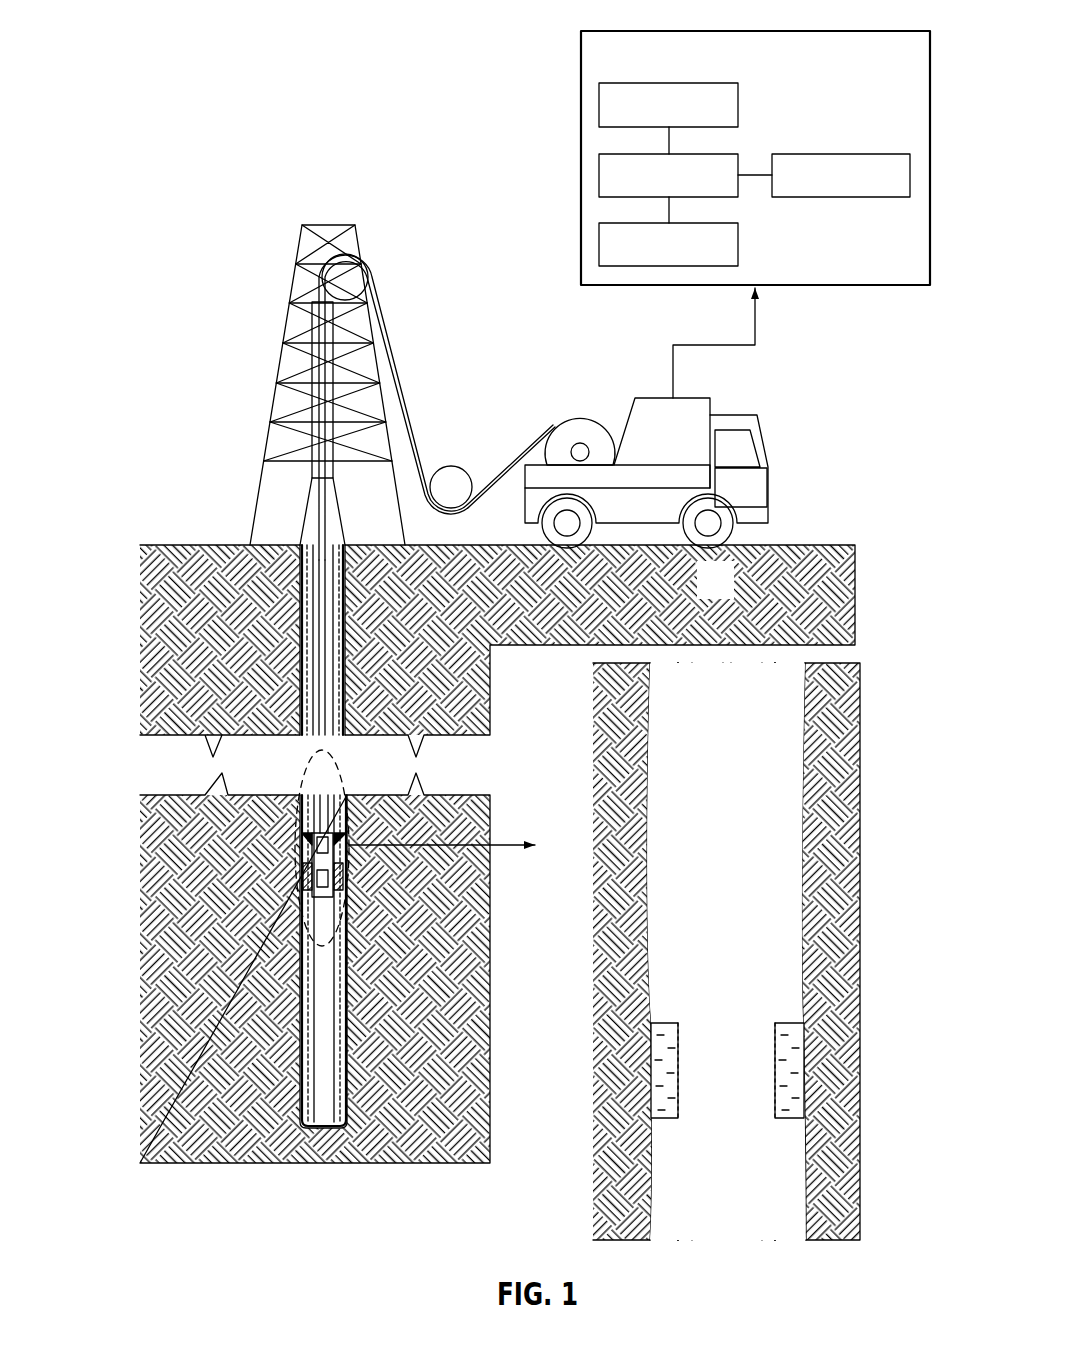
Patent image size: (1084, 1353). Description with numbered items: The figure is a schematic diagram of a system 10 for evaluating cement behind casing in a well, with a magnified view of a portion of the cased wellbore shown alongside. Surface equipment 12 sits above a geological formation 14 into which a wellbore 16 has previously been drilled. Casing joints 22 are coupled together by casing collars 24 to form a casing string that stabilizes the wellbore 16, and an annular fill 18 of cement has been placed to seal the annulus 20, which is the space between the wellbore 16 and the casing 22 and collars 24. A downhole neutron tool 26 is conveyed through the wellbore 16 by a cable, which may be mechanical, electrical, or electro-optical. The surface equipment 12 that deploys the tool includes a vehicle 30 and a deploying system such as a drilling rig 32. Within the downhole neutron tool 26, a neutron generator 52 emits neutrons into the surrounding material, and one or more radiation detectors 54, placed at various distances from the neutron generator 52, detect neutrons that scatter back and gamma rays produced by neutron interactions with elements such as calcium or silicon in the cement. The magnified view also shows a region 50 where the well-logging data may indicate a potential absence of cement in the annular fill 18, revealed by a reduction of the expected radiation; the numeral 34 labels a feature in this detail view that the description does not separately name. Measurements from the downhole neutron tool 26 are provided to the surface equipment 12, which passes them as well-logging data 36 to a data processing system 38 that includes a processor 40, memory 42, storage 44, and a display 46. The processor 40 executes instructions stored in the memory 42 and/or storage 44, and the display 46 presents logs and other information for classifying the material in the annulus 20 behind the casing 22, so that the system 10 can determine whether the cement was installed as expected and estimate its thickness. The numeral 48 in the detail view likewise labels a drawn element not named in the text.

The system 10 is at (277, 975).
The surface equipment 12 is at (503, 291).
The geological formation 14 is at (163, 888).
The wellbore 16 is at (298, 596).
The annular fill 18 is at (298, 630).
The annulus 20 is at (298, 665).
The casing joints 22 is at (298, 1012).
The casing collars 24 is at (349, 1049).
The downhole neutron tool 26 is at (506, 986).
The vehicle 30 is at (700, 395).
The drilling rig 32 is at (297, 291).
The perforation 34 is at (771, 1085).
The well-logging data 36 is at (757, 320).
The data processing system 38 is at (758, 142).
The processor 40 is at (740, 157).
The memory 42 is at (740, 103).
The storage 44 is at (740, 251).
The display 46 is at (858, 154).
The formation 48 is at (789, 778).
The region 50 is at (794, 1073).
The neutron generator 52 is at (729, 1097).
The radiation detectors 54 is at (728, 975).